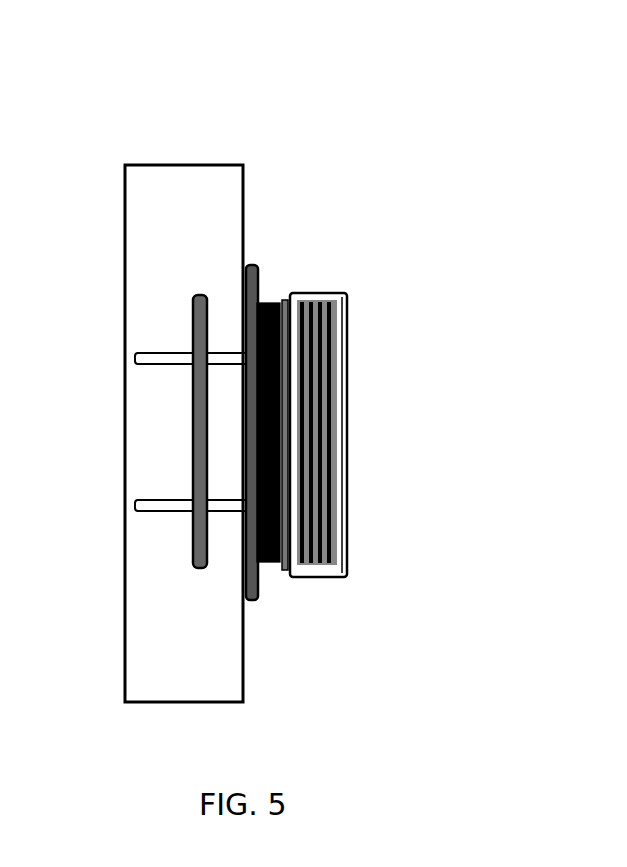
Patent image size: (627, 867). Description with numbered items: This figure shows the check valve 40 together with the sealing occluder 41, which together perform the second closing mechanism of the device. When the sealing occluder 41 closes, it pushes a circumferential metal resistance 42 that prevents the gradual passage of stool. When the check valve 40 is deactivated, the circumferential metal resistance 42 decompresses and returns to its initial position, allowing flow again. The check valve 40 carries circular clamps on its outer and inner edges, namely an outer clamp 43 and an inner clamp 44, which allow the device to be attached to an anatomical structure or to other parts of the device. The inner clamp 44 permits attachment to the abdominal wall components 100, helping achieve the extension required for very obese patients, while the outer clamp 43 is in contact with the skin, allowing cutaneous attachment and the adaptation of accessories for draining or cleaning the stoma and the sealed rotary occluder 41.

The abdominal wall components 100 is at (222, 197).
The check valve 40 is at (287, 570).
The sealing occluder 41 is at (366, 399).
The circumferential metal resistance 42 is at (302, 355).
The outer clamp 43 is at (268, 264).
The inner clamp 44 is at (188, 301).